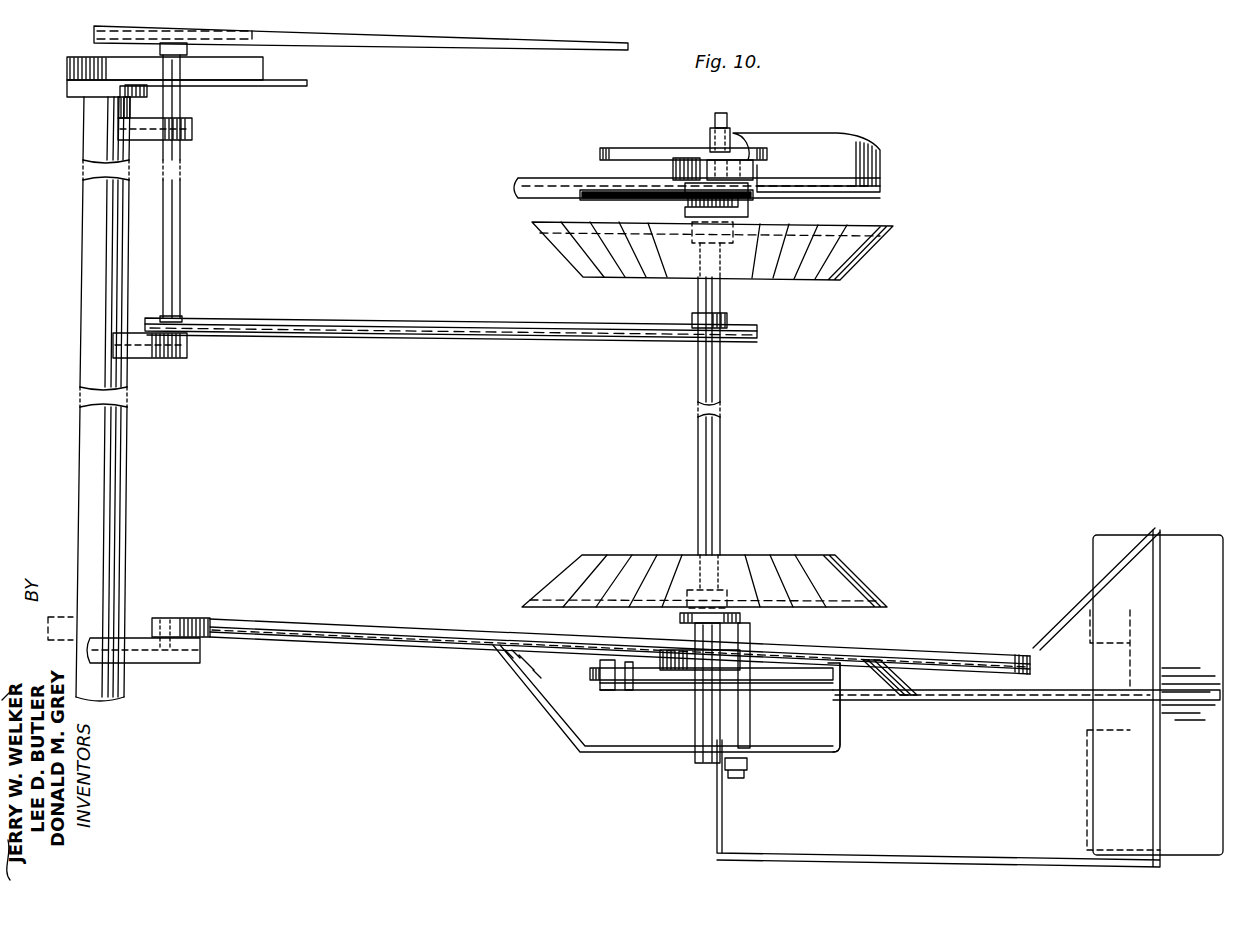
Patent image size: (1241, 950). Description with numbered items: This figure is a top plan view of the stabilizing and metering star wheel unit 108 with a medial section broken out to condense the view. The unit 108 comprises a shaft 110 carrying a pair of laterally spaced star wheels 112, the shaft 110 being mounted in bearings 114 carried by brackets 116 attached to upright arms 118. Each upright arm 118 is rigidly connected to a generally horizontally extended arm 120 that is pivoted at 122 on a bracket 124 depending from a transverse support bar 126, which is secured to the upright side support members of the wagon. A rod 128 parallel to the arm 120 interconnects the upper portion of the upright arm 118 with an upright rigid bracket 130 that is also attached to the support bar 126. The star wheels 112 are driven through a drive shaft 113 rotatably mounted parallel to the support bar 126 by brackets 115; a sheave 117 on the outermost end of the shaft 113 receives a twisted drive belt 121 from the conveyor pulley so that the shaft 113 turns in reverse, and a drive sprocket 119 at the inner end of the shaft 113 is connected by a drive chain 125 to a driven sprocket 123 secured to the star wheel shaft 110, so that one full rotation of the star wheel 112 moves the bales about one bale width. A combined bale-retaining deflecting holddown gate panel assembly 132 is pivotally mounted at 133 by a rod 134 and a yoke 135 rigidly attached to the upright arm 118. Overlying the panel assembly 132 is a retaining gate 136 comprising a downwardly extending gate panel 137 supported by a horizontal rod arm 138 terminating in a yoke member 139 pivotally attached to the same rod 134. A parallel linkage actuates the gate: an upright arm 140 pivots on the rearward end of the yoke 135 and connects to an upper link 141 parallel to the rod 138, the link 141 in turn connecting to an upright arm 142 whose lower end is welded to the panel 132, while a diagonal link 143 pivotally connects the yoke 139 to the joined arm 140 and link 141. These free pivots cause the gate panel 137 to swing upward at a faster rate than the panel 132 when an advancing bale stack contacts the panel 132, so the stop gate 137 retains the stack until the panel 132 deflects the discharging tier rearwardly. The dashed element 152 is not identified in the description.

The stabilizing and metering star wheel unit 108 is at (474, 669).
The shaft 110 is at (722, 396).
The star wheel 112 is at (855, 276).
The drive shaft 113 is at (183, 250).
The bearing 114 is at (740, 236).
The bracket 115 is at (193, 124).
The bracket 116 is at (760, 195).
The sheave 117 is at (106, 27).
The upright arm 118 is at (768, 150).
The drive sprocket 119 is at (175, 323).
The horizontally extended arm 120 is at (511, 188).
The drive belt 121 is at (378, 45).
The pivot 122 is at (165, 617).
The driven sprocket 123 is at (735, 318).
The bracket 124 is at (128, 648).
The drive chain 125 is at (413, 318).
The transverse support bar 126 is at (132, 388).
The rod 128 is at (65, 68).
The upright rigid bracket 130 is at (205, 650).
The holddown gate panel assembly 132 is at (855, 131).
The pivot 133 is at (746, 772).
The rod 134 is at (750, 735).
The yoke 135 is at (604, 151).
The retaining gate 136 is at (1196, 843).
The gate panel 137 is at (1100, 790).
The rod arm 138 is at (1032, 700).
The yoke member 139 is at (842, 716).
The upright arm 140 is at (626, 690).
The upper link 141 is at (810, 698).
The upright arm 142 is at (905, 680).
The diagonal link 143 is at (690, 650).
The opening 152 is at (1080, 735).